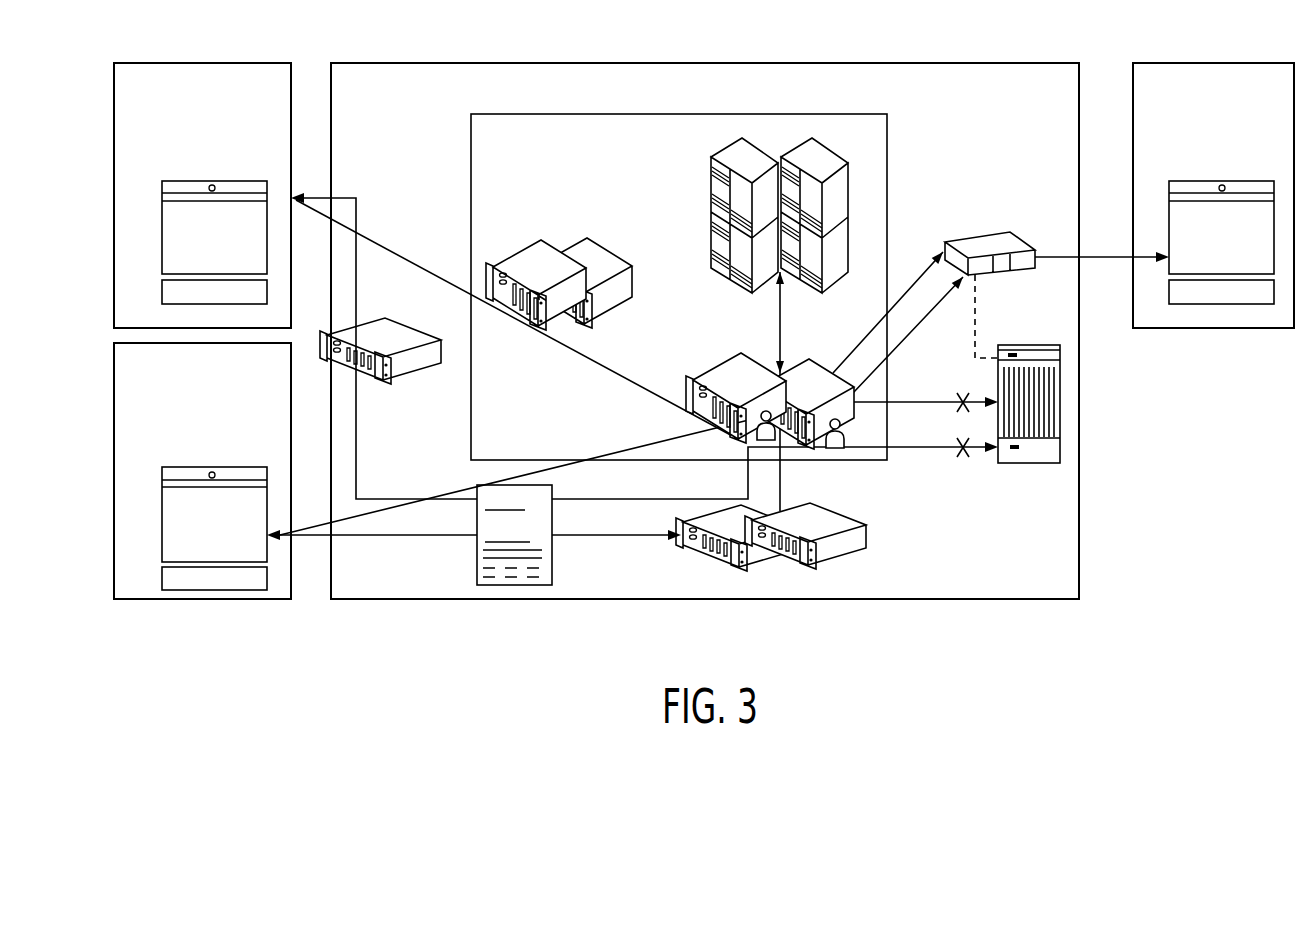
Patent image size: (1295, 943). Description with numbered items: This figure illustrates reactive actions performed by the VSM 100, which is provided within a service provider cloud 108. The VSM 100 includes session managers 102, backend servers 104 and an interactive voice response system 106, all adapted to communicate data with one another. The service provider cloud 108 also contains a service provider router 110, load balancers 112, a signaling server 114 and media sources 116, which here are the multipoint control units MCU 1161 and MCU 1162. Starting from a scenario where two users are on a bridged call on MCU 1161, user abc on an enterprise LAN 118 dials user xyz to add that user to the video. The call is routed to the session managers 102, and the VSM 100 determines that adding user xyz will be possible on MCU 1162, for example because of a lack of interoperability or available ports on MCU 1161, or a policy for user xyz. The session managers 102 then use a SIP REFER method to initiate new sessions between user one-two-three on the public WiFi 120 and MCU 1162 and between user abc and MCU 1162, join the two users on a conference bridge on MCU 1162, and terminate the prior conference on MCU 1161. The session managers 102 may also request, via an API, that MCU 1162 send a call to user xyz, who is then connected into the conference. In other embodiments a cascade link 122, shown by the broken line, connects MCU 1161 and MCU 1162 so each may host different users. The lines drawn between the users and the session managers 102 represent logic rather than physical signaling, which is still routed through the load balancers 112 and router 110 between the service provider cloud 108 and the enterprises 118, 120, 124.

The VSM 100 is at (887, 137).
The session managers 102 is at (809, 359).
The backend servers 104 is at (815, 147).
The interactive voice response (IVR) system 106 is at (573, 242).
The service provider cloud 108 is at (1079, 545).
The service provider router 110 is at (552, 555).
The load balancers 112 is at (795, 565).
The signaling server 114 is at (413, 327).
The media sources 116 is at (1002, 354).
The MCU 1161 is at (1032, 466).
The MCU 1162 is at (990, 232).
The enterprise LAN 118 is at (113, 468).
The public WiFi 120 is at (113, 205).
The cascade link 122 is at (975, 315).
The enterprise 124 is at (1228, 329).